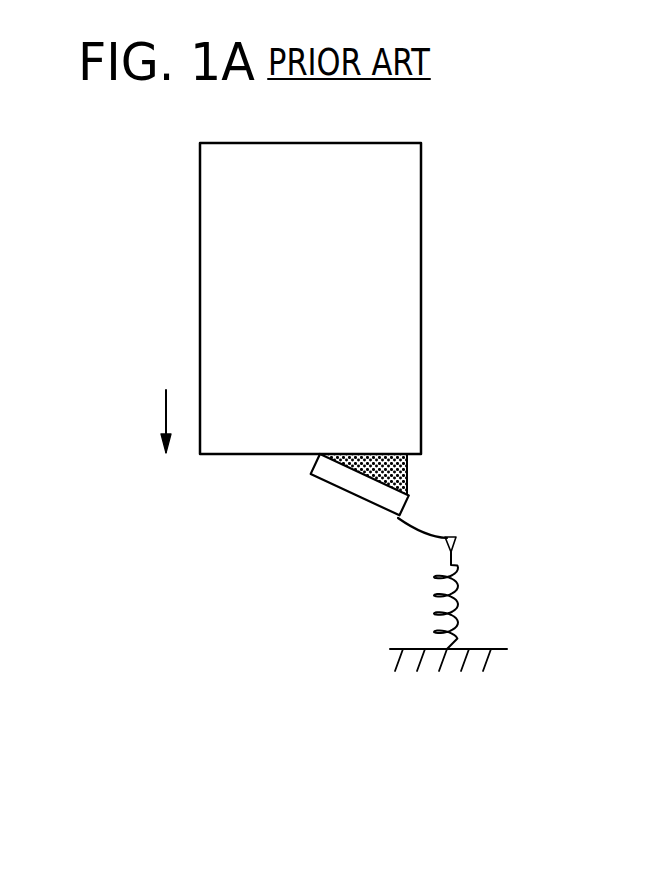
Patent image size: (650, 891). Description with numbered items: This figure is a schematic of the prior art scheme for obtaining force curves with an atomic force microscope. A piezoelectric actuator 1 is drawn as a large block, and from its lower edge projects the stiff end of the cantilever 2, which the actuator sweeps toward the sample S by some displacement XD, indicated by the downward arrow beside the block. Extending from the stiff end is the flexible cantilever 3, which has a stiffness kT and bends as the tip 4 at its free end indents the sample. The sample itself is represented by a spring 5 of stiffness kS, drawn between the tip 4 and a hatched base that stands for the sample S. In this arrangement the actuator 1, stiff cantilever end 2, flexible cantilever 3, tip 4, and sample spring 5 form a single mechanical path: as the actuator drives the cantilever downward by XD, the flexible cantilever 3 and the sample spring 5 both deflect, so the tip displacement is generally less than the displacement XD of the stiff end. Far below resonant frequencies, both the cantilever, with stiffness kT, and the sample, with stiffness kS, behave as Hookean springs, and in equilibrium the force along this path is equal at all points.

The piezoelectric actuator 1 is at (210, 228).
The cantilever 2 is at (362, 492).
The flexible cantilever 3 is at (424, 532).
The tip 4 is at (458, 544).
The spring 5 is at (458, 628).
The displacement of the stiff end of the cantilever XD is at (164, 412).
The cantilever stiffness kT is at (410, 542).
The sample stiffness kS is at (485, 578).
The sample S is at (376, 678).